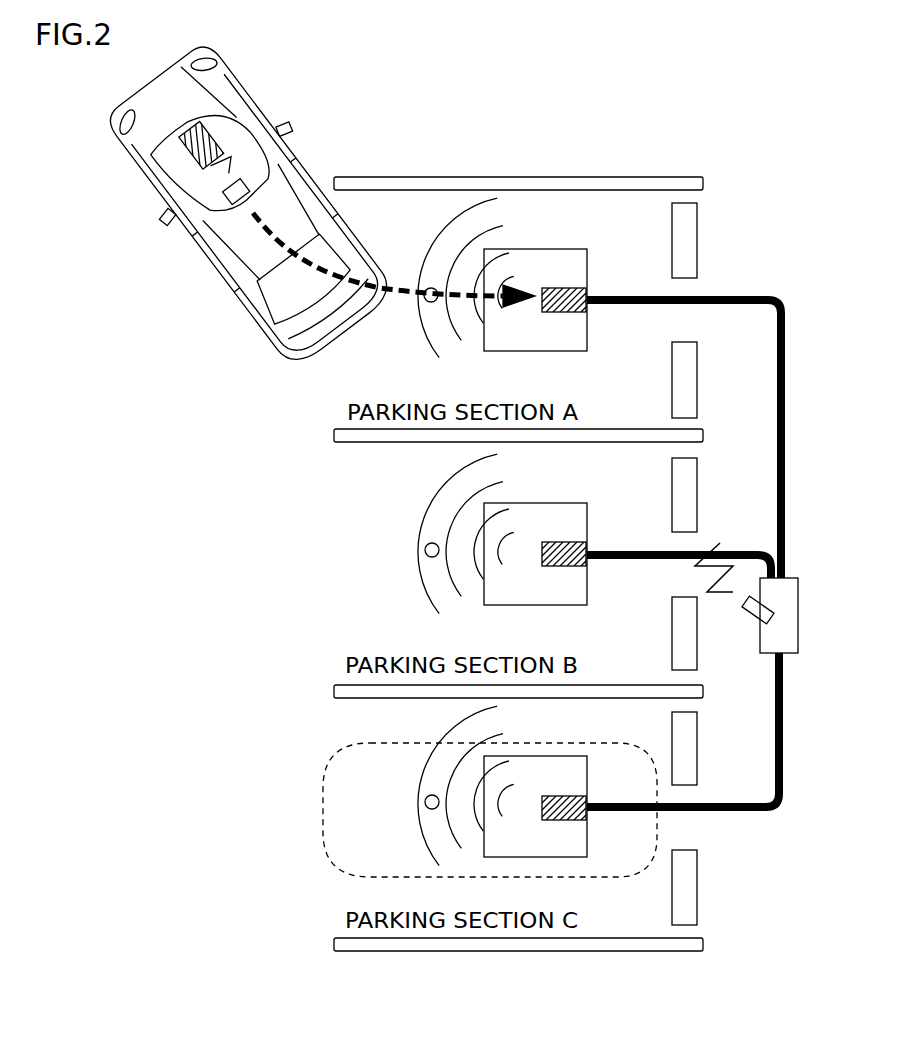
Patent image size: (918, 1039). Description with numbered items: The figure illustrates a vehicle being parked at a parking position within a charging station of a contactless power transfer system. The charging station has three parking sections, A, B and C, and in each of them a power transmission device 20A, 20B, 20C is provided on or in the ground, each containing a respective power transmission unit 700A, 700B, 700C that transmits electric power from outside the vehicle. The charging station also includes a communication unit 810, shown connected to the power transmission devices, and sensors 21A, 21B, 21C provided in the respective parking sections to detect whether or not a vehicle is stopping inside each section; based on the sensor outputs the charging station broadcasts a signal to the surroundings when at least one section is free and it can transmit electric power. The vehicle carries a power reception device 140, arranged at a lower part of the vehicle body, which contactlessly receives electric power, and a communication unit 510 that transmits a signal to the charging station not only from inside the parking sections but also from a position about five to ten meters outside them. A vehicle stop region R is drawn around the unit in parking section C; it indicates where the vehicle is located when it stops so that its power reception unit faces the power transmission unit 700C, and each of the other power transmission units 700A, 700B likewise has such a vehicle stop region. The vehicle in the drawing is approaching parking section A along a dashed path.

The power reception device 140 is at (180, 148).
The communication unit 510 is at (230, 205).
The sensor 21A is at (428, 288).
The sensor 21B is at (428, 543).
The sensor 21C is at (426, 797).
The power transmission device 20A is at (521, 277).
The power transmission device 20B is at (521, 533).
The power transmission device 20C is at (521, 785).
The power transmission unit 700A is at (562, 287).
The power transmission unit 700B is at (562, 541).
The power transmission unit 700C is at (562, 795).
The communication unit 810 is at (750, 622).
The vehicle stop region R is at (338, 863).